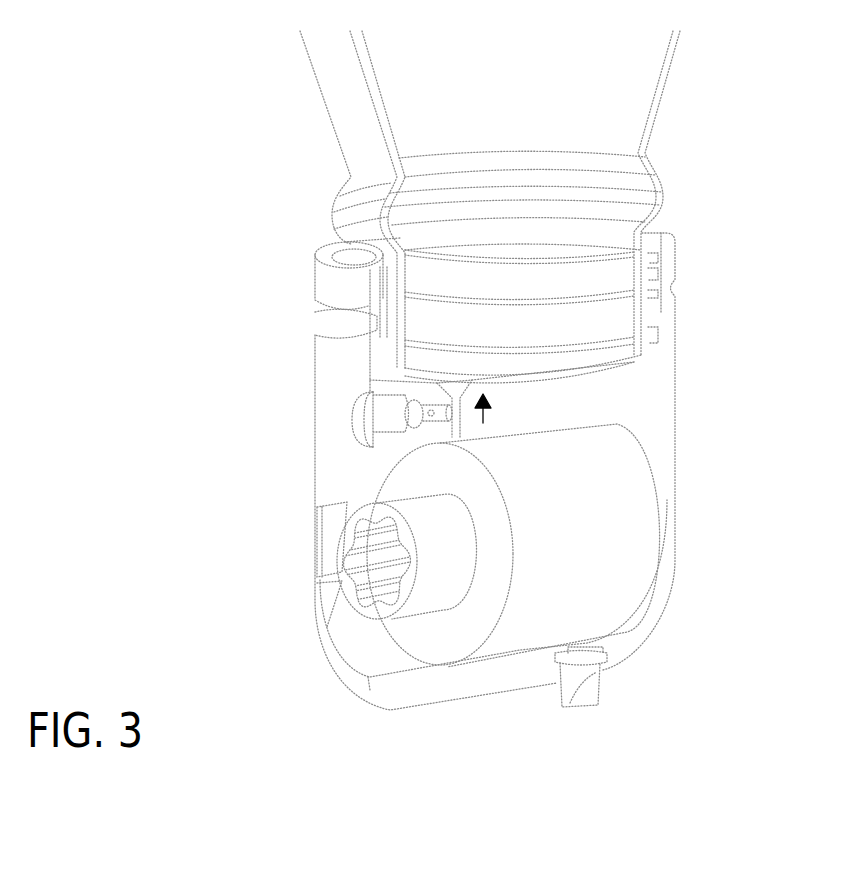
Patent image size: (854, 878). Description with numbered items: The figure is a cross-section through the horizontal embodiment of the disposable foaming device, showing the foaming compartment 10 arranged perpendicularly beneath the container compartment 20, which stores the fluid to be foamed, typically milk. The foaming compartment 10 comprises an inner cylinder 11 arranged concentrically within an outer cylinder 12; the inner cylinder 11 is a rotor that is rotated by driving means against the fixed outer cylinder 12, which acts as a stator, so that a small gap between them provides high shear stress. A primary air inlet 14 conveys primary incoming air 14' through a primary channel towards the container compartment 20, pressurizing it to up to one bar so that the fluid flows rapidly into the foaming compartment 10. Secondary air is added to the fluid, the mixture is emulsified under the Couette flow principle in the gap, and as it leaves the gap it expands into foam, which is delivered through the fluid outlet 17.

The foaming compartment 10 is at (675, 381).
The inner cylinder 11 is at (427, 633).
The outer cylinder 12 is at (340, 470).
The primary air inlet 14 is at (318, 407).
The primary incoming air 14' is at (622, 414).
The fluid outlet 17 is at (590, 690).
The container compartment 20 is at (325, 103).